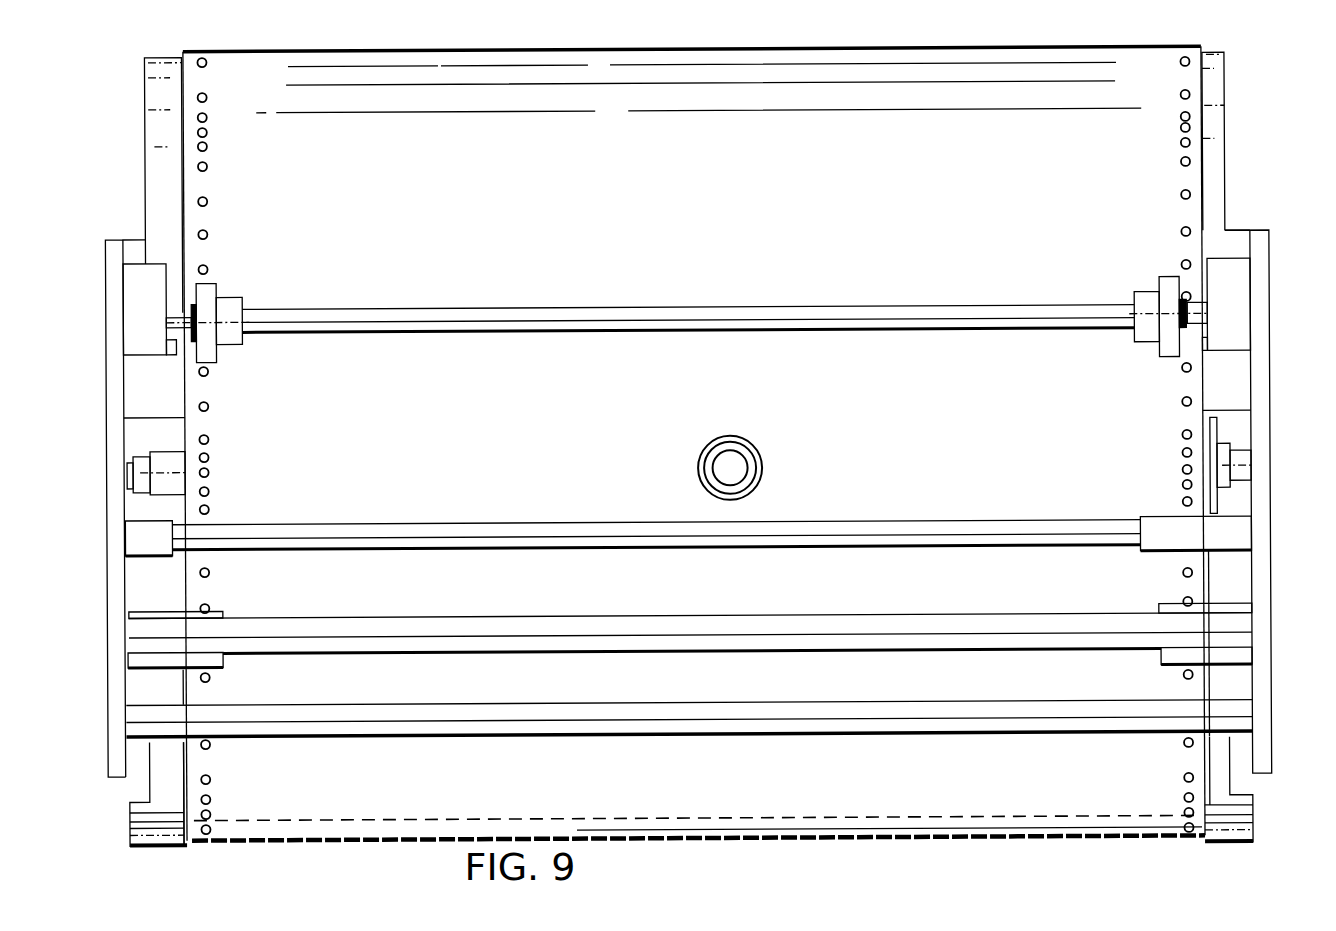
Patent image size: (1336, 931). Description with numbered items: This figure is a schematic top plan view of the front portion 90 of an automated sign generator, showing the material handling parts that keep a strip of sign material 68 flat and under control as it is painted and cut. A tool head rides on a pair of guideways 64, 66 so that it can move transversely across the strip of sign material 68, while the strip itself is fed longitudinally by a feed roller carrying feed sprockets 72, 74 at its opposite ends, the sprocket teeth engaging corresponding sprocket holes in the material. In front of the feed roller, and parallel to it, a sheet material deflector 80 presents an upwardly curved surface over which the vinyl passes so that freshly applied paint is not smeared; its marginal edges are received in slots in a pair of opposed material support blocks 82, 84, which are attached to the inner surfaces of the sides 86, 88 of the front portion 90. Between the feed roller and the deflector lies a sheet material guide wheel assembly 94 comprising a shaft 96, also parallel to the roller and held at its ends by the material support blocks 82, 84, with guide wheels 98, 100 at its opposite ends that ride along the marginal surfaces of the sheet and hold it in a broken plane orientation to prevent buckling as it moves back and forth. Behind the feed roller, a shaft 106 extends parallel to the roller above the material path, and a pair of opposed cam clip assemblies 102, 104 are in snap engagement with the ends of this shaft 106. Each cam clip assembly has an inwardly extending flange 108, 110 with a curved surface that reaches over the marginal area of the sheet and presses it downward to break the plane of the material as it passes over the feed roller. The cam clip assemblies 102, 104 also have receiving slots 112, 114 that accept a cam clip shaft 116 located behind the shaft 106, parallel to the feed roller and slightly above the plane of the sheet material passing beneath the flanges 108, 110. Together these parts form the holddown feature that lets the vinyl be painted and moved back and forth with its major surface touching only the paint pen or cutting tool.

The guideway 64 is at (647, 702).
The guideway 66 is at (867, 549).
The strip of sign material 68 is at (1197, 79).
The feed sprocket 72 is at (1210, 442).
The feed sprocket 74 is at (184, 449).
The sheet material deflector 80 is at (1213, 165).
The material support block 82 is at (1233, 278).
The material support block 84 is at (132, 315).
The side 86 is at (1258, 318).
The side 88 is at (112, 260).
The front portion 90 is at (1251, 216).
The sheet material guide wheel assembly 94 is at (934, 268).
The shaft 96 is at (583, 305).
The guide wheel 98 is at (1169, 279).
The guide wheel 100 is at (214, 280).
The cam clip assembly 102 is at (140, 779).
The cam clip assembly 104 is at (1259, 791).
The shaft 106 is at (458, 612).
The inwardly extending flange 108 is at (195, 608).
The inwardly extending flange 110 is at (1166, 605).
The receiving slot 112 is at (148, 847).
The receiving slot 114 is at (1229, 850).
The cam clip shaft 116 is at (838, 838).